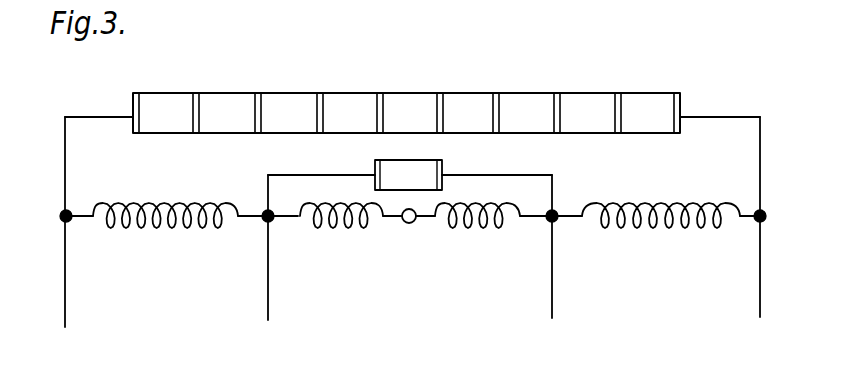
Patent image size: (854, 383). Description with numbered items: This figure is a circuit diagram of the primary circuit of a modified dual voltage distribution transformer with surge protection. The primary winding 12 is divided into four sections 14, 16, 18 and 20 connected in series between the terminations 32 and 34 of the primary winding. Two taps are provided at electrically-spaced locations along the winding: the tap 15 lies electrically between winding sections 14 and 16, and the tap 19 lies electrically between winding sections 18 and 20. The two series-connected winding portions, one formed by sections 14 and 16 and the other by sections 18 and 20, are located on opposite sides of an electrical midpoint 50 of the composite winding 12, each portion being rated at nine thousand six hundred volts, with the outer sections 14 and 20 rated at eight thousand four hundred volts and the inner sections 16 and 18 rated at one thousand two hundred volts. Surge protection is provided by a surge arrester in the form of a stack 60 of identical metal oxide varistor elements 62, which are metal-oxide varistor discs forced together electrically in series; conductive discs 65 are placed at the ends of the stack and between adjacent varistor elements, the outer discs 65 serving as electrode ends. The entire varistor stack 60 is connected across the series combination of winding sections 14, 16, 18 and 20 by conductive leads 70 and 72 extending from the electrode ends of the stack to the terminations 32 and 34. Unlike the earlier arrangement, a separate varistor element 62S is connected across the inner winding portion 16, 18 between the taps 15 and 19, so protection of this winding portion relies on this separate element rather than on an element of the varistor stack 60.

The primary winding 12 is at (128, 233).
The winding section 14 is at (151, 227).
The tap 15 is at (262, 222).
The winding section 16 is at (323, 226).
The winding section 18 is at (497, 226).
The tap 19 is at (557, 222).
The winding section 20 is at (665, 228).
The termination of the primary winding 32 is at (63, 222).
The termination of the primary winding 34 is at (752, 222).
The electrical midpoint 50 is at (415, 226).
The varistor stack 60 is at (211, 89).
The metal oxide varistor elements 62 is at (353, 103).
The separate varistor element 62S is at (420, 163).
The conductive discs 65 is at (133, 95).
The conductive lead 70 is at (82, 117).
The conductive lead 72 is at (712, 117).